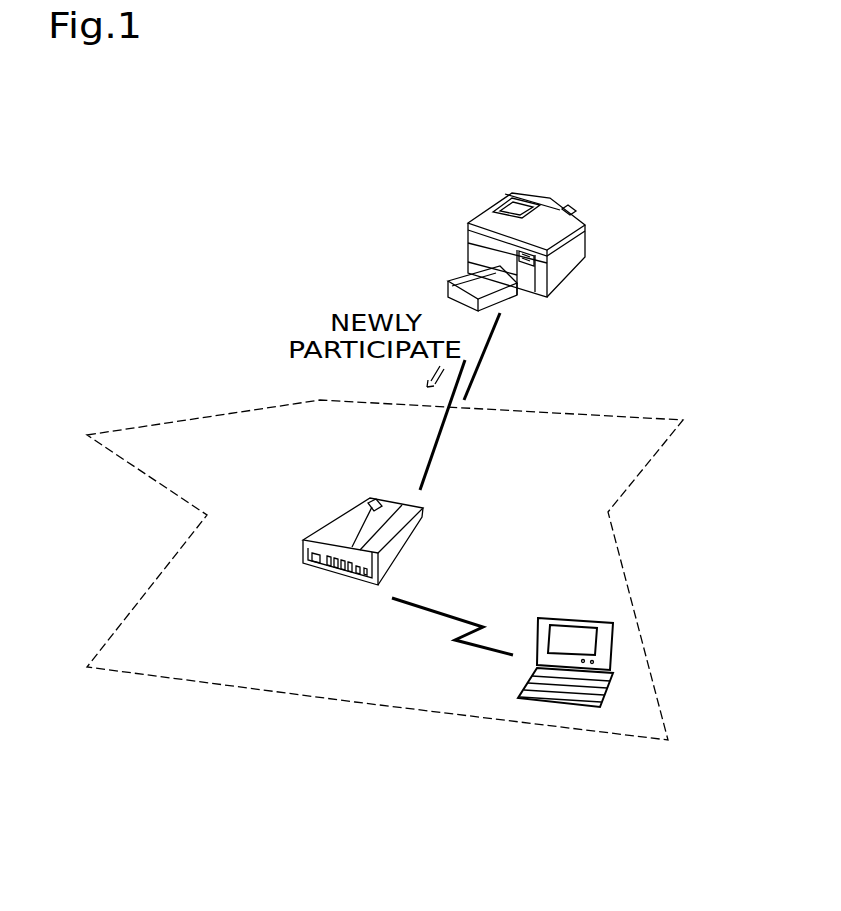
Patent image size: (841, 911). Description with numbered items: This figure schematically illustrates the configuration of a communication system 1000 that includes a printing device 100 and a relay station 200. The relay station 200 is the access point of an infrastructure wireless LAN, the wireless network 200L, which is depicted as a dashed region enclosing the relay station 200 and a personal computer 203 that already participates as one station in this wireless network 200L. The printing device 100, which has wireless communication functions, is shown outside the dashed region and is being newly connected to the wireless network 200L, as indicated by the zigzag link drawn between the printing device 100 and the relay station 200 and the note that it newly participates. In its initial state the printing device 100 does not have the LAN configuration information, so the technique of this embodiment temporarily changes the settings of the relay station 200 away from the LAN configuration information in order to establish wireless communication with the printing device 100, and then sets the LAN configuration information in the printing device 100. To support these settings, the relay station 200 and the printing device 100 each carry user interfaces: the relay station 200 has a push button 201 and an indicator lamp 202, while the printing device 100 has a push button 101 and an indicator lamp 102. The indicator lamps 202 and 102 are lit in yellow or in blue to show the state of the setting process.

The printing device 100 is at (466, 236).
The push button 101 is at (567, 213).
The indicator lamp 102 is at (528, 265).
The communication system 1000 is at (568, 365).
The relay station 200 is at (342, 512).
The push button 201 is at (373, 505).
The indicator lamp 202 is at (363, 566).
The personal computer 203 is at (608, 693).
The wireless network 200L is at (355, 702).